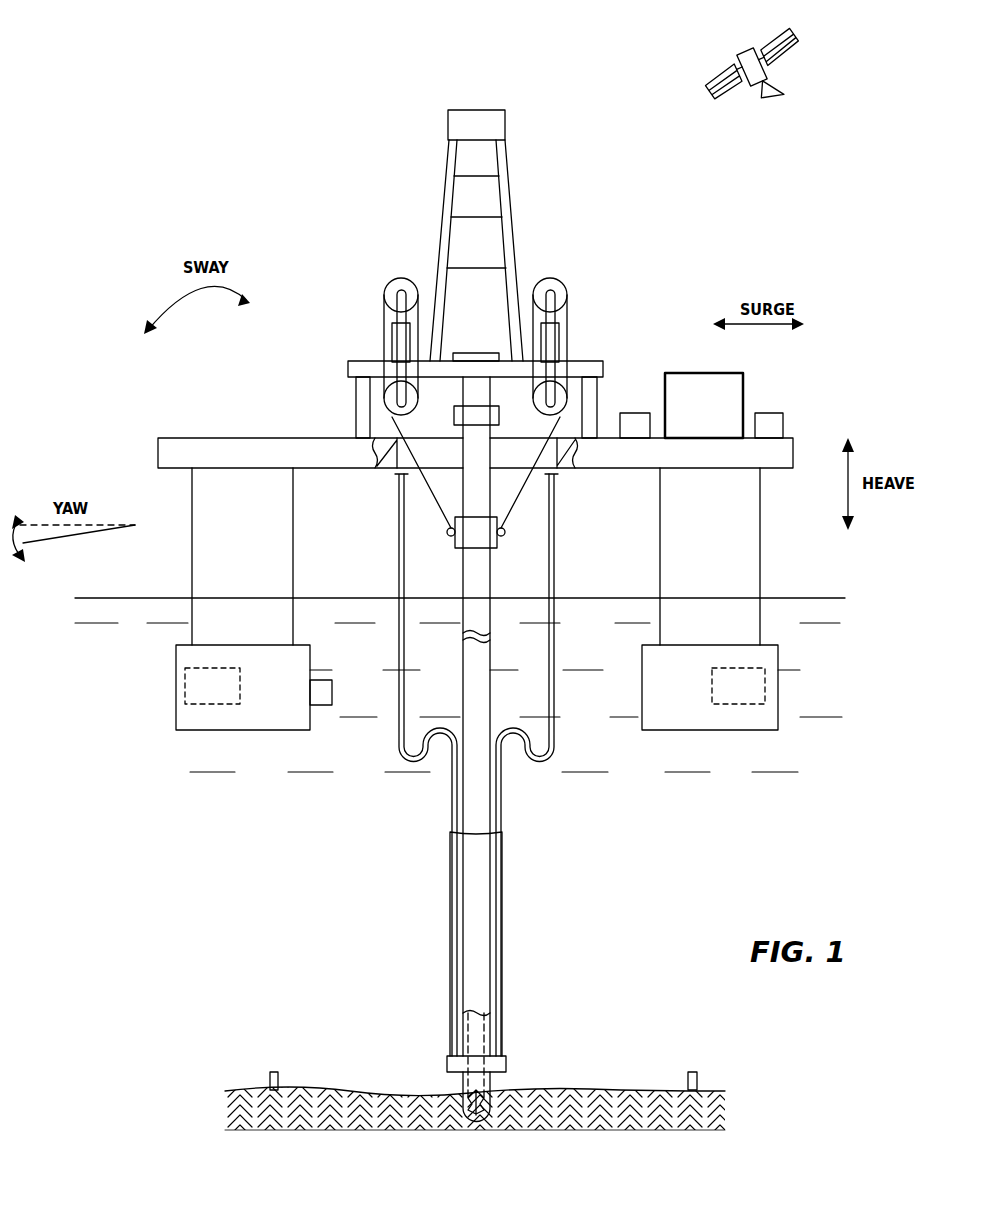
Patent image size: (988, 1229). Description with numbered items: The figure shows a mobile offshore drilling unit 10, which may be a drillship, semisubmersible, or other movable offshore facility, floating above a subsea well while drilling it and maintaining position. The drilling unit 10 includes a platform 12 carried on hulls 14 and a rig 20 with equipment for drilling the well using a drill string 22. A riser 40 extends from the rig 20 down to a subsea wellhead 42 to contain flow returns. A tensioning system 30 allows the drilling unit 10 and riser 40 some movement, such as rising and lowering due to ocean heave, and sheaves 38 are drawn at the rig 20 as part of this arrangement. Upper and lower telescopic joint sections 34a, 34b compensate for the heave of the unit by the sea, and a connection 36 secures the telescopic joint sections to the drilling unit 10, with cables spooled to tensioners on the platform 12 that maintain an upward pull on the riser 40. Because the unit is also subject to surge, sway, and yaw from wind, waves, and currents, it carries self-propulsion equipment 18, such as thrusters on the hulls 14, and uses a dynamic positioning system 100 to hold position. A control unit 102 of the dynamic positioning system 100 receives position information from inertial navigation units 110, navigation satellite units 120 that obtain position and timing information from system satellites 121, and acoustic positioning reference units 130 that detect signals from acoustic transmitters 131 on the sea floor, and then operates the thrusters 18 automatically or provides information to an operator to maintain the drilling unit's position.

The mobile offshore drilling unit 10 is at (104, 104).
The system satellite 121 is at (776, 45).
The rig 20 is at (514, 190).
The tensioning system 30 is at (345, 352).
The sheaves 38 is at (386, 290).
The upper telescopic joint section 34a is at (490, 500).
The tensioner ring 36 is at (452, 532).
The lower telescopic joint section 34b is at (463, 568).
The platform 12 is at (150, 446).
The hull 14 is at (192, 560).
The self-propulsion equipment 18 is at (183, 688).
The acoustic positioning reference unit 130 is at (325, 707).
The riser 40 is at (463, 872).
The subsea wellhead 42 is at (447, 1063).
The drill string 22 is at (484, 1035).
The acoustic transmitter 131 is at (691, 1072).
The dynamic positioning system 100 is at (690, 326).
The inertial navigation unit 110 is at (634, 413).
The control unit 102 is at (713, 373).
The navigation satellite unit 120 is at (775, 413).